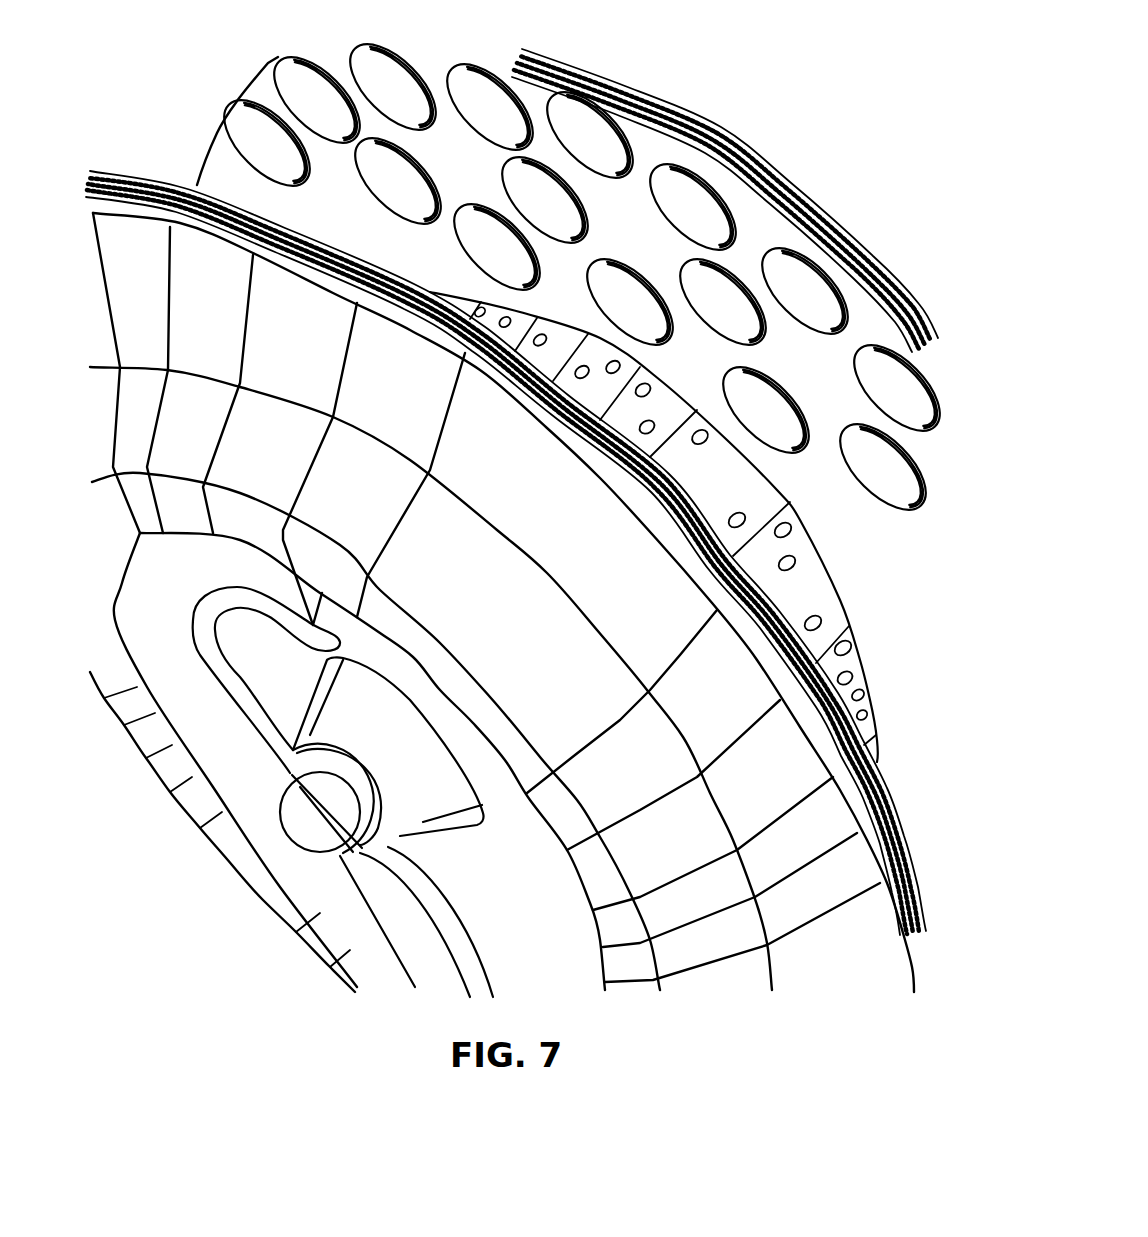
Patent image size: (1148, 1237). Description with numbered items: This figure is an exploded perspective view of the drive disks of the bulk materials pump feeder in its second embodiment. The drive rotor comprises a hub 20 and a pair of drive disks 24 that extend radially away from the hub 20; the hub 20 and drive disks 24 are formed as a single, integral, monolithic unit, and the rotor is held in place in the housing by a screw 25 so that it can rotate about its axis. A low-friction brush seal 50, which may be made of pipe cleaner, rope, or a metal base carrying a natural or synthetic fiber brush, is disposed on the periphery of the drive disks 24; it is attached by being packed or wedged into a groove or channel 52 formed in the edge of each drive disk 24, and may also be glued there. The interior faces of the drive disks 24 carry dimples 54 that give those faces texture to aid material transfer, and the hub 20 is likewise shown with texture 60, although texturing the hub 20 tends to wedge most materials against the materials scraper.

The hub 20 is at (814, 617).
The drive disks 24 is at (135, 430).
The screw 25 is at (310, 823).
The brush seal 50 is at (150, 173).
The channel 52 is at (122, 207).
The dimples 54 is at (590, 143).
The texture 60 is at (790, 563).